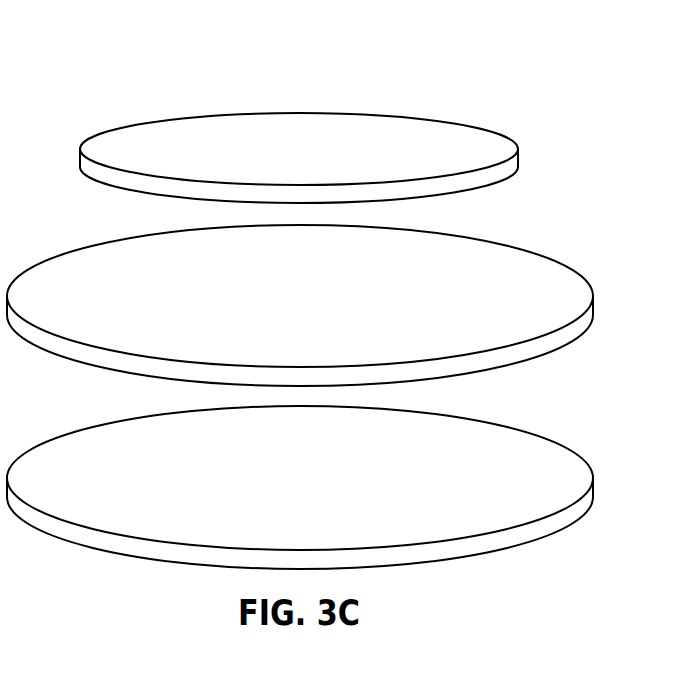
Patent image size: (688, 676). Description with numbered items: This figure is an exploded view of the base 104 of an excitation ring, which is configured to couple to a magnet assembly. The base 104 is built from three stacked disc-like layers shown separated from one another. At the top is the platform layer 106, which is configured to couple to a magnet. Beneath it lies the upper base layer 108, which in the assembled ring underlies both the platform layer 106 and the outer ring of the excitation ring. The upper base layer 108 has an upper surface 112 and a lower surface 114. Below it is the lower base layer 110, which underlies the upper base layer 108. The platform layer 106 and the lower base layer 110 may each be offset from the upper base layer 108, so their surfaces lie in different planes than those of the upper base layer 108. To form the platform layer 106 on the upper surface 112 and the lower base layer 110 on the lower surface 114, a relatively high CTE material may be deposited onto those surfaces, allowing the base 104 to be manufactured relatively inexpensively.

The base 104 is at (489, 64).
The platform layer 106 is at (319, 168).
The upper base layer 108 is at (321, 309).
The lower base layer 110 is at (319, 498).
The upper surface 112 is at (471, 256).
The lower surface 114 is at (514, 385).